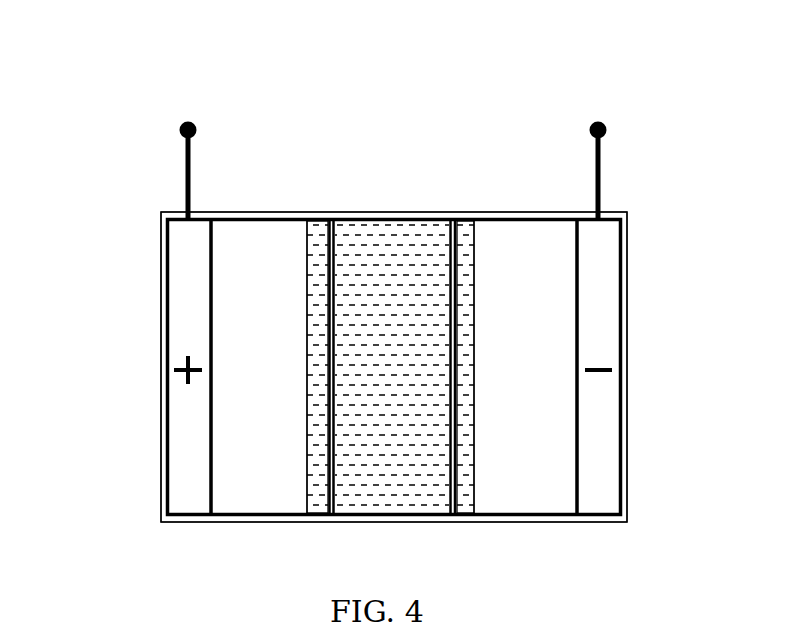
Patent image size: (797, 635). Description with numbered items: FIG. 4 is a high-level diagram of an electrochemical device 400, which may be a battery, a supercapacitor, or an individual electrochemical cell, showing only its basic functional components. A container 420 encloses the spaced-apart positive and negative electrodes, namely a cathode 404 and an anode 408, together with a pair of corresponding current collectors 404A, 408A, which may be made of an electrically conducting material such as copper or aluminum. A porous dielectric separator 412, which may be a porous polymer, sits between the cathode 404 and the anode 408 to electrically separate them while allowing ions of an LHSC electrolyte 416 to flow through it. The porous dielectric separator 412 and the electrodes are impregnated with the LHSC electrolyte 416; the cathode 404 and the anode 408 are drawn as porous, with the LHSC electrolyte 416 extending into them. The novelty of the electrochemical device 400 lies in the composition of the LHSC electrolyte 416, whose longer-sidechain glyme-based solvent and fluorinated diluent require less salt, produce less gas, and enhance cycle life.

The electrochemical device 400 is at (524, 88).
The container 420 is at (160, 260).
The cathode 404 is at (289, 280).
The current collector 404A is at (180, 446).
The anode 408 is at (539, 280).
The current collector 408A is at (600, 441).
The porous dielectric separator 412 is at (410, 479).
The LHSC electrolyte 416 is at (424, 236).